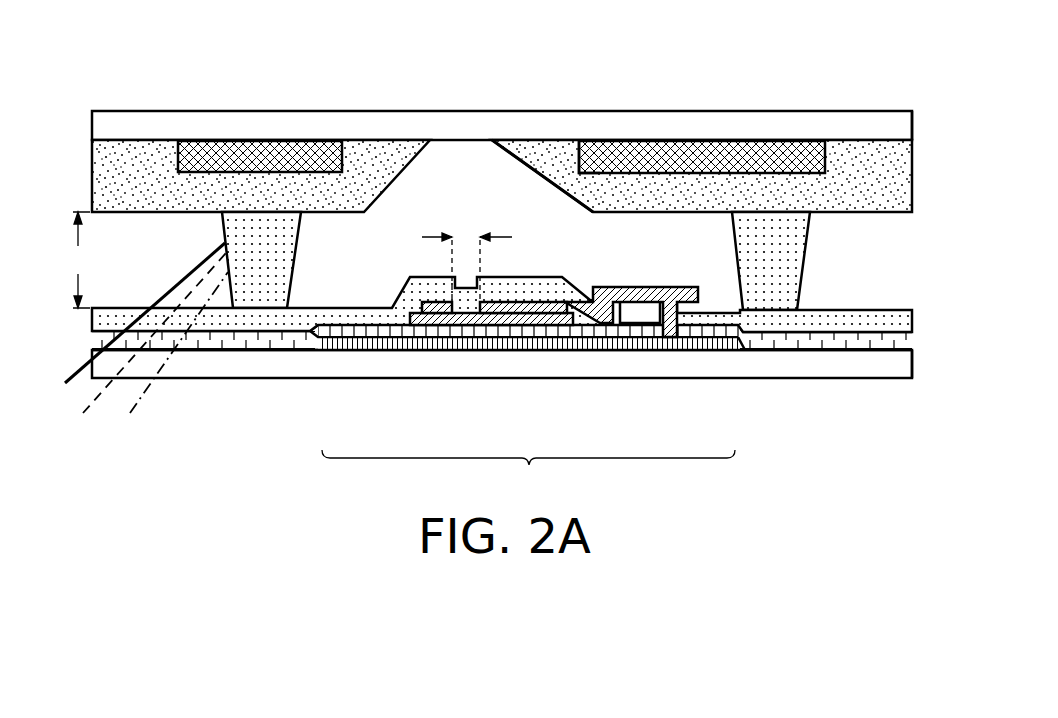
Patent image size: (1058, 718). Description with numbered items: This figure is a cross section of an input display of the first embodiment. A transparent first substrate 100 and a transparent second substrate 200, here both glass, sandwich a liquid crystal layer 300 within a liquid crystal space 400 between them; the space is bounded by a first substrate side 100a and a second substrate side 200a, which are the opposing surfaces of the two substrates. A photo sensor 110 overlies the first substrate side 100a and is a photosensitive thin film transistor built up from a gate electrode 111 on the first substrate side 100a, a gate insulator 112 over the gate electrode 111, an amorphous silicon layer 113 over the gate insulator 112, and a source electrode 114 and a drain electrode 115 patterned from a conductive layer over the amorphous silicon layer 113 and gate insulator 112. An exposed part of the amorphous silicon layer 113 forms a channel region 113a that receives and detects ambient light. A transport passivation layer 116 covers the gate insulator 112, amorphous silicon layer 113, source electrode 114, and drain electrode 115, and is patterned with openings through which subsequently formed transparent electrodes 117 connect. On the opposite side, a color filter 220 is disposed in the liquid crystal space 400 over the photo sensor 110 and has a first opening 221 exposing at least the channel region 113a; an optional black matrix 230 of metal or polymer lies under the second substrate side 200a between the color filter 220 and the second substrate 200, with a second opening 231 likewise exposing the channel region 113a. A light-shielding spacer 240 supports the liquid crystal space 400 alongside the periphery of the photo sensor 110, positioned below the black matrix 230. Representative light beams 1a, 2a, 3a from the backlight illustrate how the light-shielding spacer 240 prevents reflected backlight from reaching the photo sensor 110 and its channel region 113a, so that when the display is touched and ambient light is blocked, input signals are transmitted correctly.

The first substrate 100 is at (815, 370).
The first substrate side 100a is at (912, 355).
The photo sensor 110 is at (528, 474).
The gate electrode 111 is at (535, 345).
The gate insulator 112 is at (473, 330).
The amorphous silicon layer 113 is at (544, 322).
The channel region 113a is at (467, 252).
The source electrode 114 is at (608, 328).
The drain electrode 115 is at (420, 318).
The transport passivation layer 116 is at (402, 312).
The transparent electrodes 117 is at (655, 328).
The second substrate 200 is at (457, 120).
The second substrate side 200a is at (916, 140).
The color filter 220 is at (133, 152).
The first opening 221 is at (544, 167).
The black matrix 230 is at (253, 150).
The second opening 231 is at (594, 153).
The light-shielding spacer 240 is at (273, 257).
The liquid crystal layer 300 is at (850, 265).
The liquid crystal space 400 is at (81, 260).
The light beam 1a is at (77, 383).
The light beam 2a is at (98, 397).
The light beam 3a is at (147, 390).